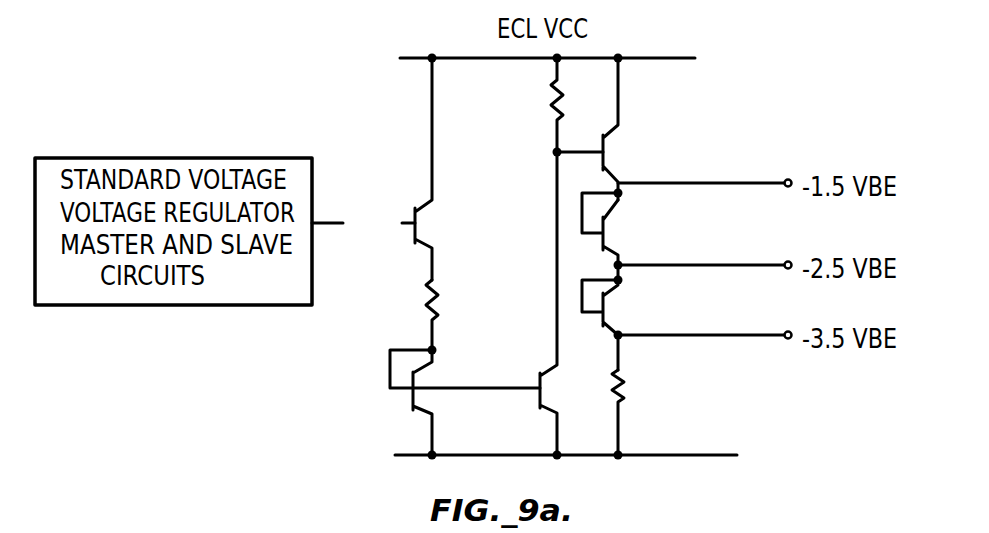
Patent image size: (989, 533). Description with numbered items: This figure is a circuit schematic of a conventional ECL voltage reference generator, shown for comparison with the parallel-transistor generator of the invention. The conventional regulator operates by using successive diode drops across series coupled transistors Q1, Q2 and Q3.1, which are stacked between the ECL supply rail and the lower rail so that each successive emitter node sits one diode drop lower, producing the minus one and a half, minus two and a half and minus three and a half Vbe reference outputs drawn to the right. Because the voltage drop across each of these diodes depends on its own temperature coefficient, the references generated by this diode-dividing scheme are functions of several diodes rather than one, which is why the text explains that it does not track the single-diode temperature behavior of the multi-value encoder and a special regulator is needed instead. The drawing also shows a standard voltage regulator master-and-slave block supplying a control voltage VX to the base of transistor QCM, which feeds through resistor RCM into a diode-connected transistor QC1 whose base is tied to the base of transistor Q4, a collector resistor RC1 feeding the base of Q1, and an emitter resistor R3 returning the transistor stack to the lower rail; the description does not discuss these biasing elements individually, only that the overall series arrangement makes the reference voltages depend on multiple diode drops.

The regulated reference voltage input VX is at (363, 224).
The master current-mirror transistor QCM is at (449, 169).
The master current-mirror resistor RCM is at (456, 315).
The diode-connected current source transistor QC1 is at (465, 402).
The current source transistor Q4 is at (561, 303).
The collector resistor RC1 is at (555, 105).
The series coupled transistor Q1 is at (622, 129).
The series coupled transistor Q2 is at (612, 236).
The series coupled transistor Q3.1 is at (621, 325).
The emitter resistor R3 is at (633, 412).